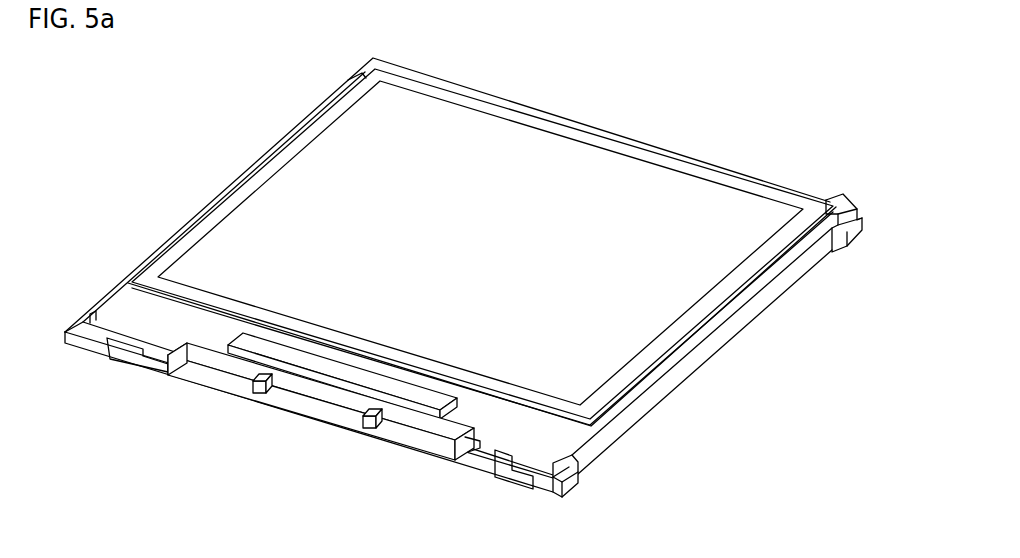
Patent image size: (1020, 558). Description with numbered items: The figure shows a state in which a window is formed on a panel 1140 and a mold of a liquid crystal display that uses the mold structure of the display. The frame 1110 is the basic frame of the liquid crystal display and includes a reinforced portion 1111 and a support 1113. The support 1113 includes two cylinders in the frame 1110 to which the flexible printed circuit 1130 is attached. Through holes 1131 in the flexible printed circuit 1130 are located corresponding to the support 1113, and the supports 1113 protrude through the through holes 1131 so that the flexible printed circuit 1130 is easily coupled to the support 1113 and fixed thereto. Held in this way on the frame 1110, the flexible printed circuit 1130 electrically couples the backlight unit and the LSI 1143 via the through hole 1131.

The frame 1110 is at (463, 306).
The reinforced portion 1111 is at (157, 357).
The support 1113 is at (358, 418).
The flexible printed circuit 1130 is at (193, 377).
The through hole 1131 is at (248, 383).
The panel 1140 is at (592, 143).
The LSI 1143 is at (338, 372).